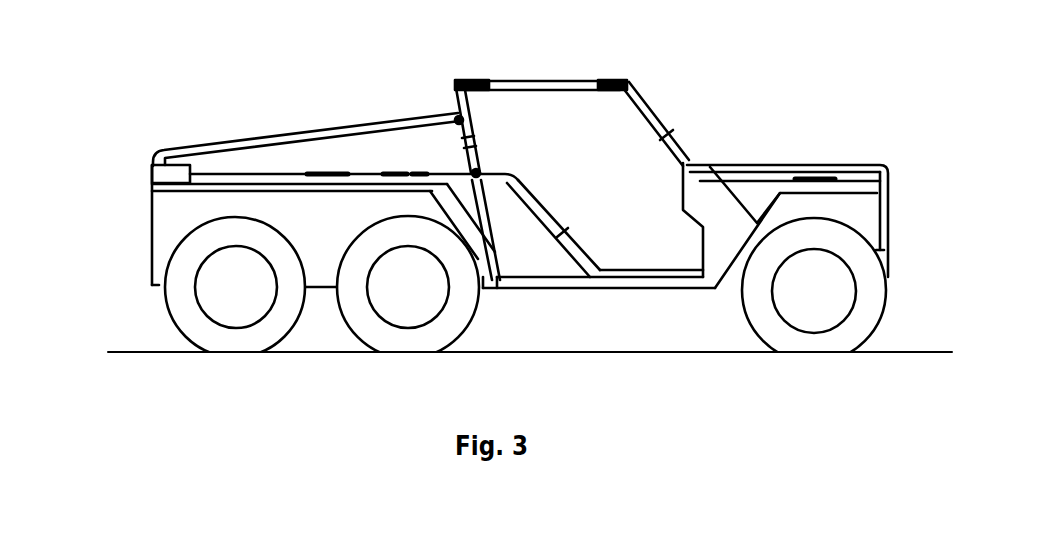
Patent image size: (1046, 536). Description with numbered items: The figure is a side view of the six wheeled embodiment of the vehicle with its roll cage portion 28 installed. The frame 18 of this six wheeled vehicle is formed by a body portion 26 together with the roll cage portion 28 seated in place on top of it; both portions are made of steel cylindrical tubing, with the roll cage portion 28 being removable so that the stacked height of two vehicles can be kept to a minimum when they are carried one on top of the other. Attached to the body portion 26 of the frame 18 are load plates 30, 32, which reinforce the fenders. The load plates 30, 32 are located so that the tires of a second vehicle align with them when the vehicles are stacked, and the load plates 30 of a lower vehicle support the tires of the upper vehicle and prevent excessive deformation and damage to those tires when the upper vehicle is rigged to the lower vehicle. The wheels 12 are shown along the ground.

The wheels 12 is at (525, 340).
The frame 18 is at (212, 180).
The body portion 26 is at (560, 238).
The roll cage portion 28 is at (530, 80).
The load plates 30 is at (402, 172).
The load plates 32 is at (817, 175).